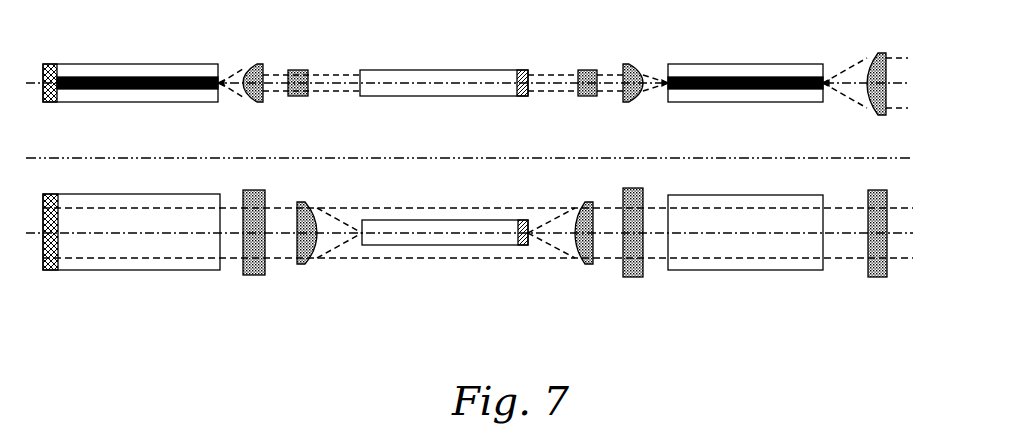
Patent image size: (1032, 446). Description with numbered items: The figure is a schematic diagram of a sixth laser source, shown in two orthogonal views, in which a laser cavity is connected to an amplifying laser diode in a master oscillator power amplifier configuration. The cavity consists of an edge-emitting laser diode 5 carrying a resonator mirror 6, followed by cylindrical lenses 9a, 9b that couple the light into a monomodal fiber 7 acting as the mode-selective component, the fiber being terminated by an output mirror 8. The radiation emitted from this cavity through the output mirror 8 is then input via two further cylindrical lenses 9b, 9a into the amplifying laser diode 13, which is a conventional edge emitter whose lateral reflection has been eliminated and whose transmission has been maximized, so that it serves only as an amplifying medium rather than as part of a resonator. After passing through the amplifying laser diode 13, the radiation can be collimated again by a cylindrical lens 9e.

The edge-emitting laser diode 5 is at (123, 73).
The resonator mirror 6 is at (50, 103).
The monomodal fiber 7 is at (423, 77).
The output mirror 8 is at (517, 95).
The cylindrical lens 9a is at (252, 102).
The cylindrical lens 9b is at (303, 96).
The cylindrical lens 9e is at (873, 100).
The amplifying laser diode 13 is at (742, 72).